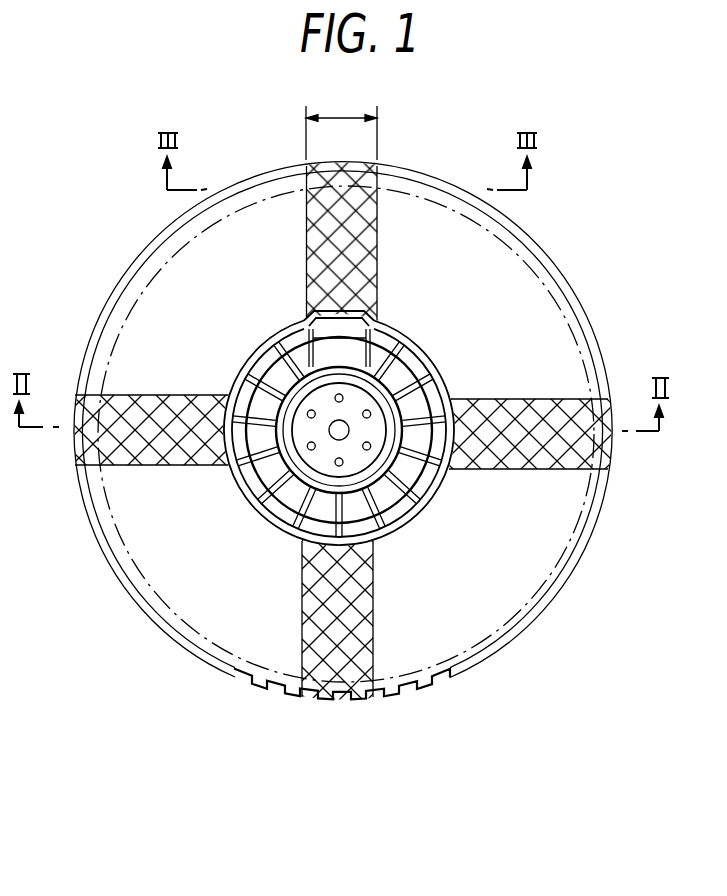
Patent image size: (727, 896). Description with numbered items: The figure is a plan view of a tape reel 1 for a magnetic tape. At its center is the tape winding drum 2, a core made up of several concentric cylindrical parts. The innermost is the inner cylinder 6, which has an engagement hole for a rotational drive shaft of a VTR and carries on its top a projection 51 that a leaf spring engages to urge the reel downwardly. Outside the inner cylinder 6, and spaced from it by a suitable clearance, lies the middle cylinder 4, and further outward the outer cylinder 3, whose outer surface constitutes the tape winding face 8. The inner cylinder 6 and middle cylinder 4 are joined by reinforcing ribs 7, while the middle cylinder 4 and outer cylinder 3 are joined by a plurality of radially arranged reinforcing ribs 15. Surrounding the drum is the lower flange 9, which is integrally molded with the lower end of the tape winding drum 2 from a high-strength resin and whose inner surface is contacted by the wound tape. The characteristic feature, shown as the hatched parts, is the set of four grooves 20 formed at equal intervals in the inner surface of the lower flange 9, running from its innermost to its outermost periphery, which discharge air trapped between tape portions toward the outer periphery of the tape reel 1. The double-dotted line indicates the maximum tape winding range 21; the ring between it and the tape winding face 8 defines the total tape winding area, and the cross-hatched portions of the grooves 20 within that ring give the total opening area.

The tape reel 1 is at (212, 116).
The tape winding drum 2 is at (437, 347).
The outer cylinder 3 is at (441, 510).
The middle cylinder 4 is at (428, 403).
The inner cylinder 6 is at (258, 524).
The reinforcing ribs 7 is at (289, 542).
The tape winding face 8 is at (415, 530).
The lower flange 9 is at (148, 632).
The reinforcing ribs 15 is at (255, 377).
The grooves 20 is at (385, 170).
The maximum tape winding range 21 is at (157, 264).
The projection 51 is at (330, 436).